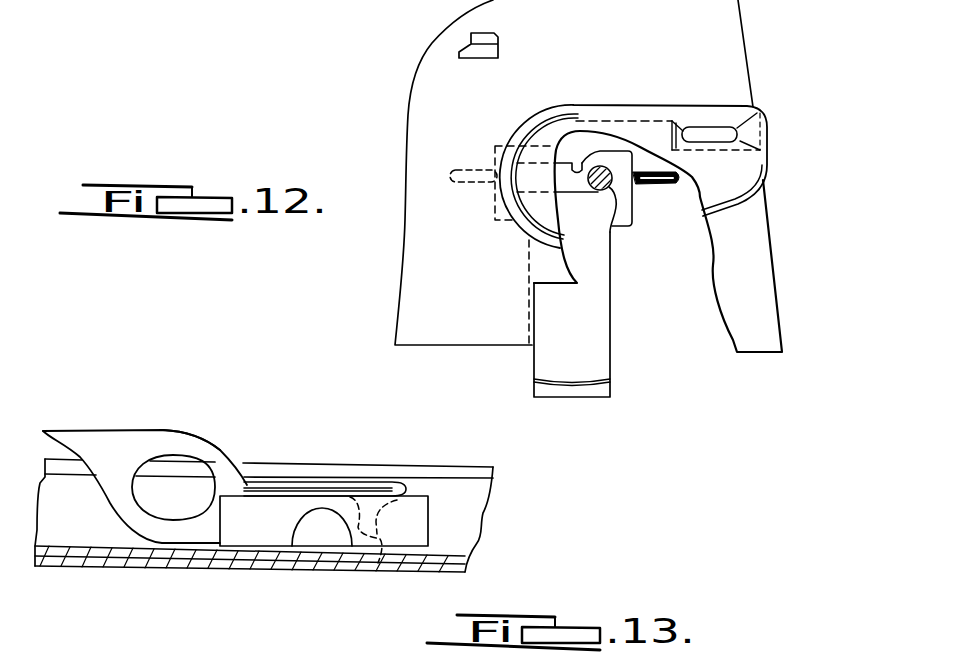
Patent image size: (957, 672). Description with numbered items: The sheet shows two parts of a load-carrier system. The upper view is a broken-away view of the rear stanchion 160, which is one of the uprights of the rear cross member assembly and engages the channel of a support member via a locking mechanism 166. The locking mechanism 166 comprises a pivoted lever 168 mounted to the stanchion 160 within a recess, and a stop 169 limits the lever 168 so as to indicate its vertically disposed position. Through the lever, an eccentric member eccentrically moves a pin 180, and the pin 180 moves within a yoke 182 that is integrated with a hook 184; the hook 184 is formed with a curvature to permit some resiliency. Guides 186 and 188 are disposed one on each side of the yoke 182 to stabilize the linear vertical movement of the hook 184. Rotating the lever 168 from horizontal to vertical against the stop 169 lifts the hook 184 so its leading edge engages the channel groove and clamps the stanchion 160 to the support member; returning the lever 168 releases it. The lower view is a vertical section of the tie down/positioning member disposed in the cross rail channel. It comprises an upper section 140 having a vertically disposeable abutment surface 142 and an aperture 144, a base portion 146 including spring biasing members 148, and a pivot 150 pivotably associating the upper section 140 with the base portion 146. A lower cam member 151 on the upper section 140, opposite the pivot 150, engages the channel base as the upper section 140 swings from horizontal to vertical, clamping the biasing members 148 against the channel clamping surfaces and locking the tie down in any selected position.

In FIG. 13, the upper section 140 is at (108, 443).
In FIG. 13, the abutment surface 142 is at (170, 432).
In FIG. 13, the aperture 144 is at (176, 514).
In FIG. 13, the base portion 146 is at (250, 523).
In FIG. 13, the spring biasing members 148 is at (389, 487).
In FIG. 13, the pivot 150 is at (327, 535).
In FIG. 13, the lower cam member 151 is at (378, 563).
In FIG. 12, the stanchion 160 is at (430, 268).
In FIG. 12, the locking mechanism 166 is at (666, 91).
In FIG. 12, the lever 168 is at (733, 168).
In FIG. 12, the stop 169 is at (500, 48).
In FIG. 12, the pin 180 is at (612, 224).
In FIG. 12, the yoke 182 is at (574, 167).
In FIG. 12, the hook 184 is at (597, 397).
In FIG. 12, the guide 186 is at (450, 176).
In FIG. 12, the guide 188 is at (665, 185).